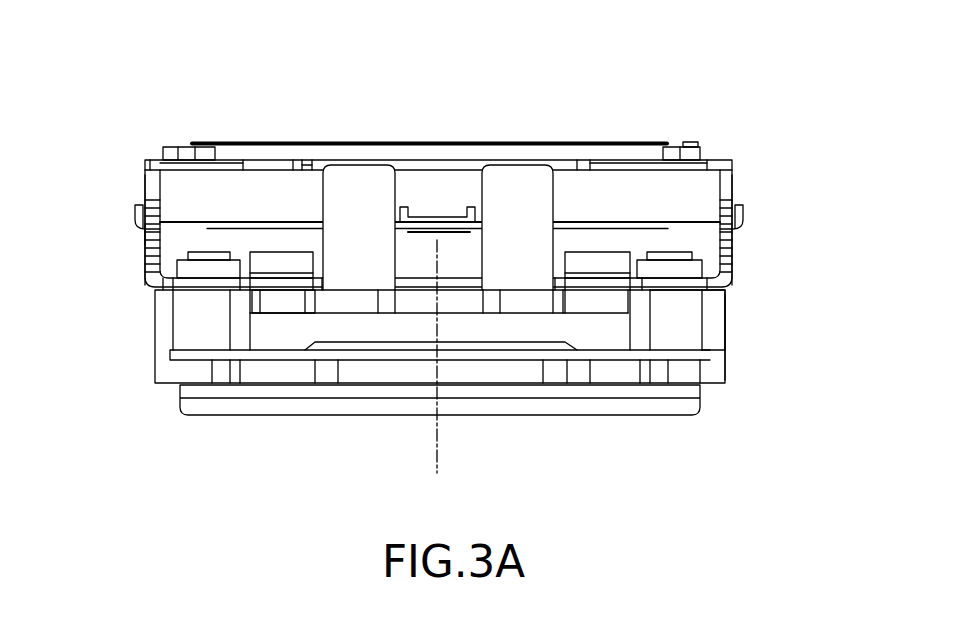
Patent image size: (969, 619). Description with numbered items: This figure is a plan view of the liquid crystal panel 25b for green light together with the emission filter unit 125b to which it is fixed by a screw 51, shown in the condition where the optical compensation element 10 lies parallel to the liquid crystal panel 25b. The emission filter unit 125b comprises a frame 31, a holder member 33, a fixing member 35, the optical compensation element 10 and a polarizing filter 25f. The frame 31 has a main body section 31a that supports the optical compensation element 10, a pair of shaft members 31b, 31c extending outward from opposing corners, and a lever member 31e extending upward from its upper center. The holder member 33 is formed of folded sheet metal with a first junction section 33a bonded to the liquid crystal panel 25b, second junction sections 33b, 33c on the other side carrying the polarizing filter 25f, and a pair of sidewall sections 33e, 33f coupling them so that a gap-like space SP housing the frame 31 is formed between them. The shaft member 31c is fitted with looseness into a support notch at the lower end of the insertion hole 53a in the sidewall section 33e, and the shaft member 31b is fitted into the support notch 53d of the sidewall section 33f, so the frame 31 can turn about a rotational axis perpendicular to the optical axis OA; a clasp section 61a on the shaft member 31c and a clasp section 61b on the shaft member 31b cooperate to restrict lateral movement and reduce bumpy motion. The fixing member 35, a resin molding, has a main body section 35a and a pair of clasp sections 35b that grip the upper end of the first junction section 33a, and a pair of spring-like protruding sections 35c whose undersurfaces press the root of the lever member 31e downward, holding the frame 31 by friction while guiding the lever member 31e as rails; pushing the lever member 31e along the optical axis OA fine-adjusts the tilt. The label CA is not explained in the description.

The holder member 33 is at (745, 158).
The sidewall section 33e is at (152, 192).
The sidewall section 33f is at (725, 196).
The first junction section 33a is at (705, 310).
The second junction section 33b is at (246, 195).
The second junction section 33c is at (630, 190).
The frame 31 is at (303, 205).
The main body section 31a is at (250, 220).
The shaft member 31b is at (705, 215).
The shaft member 31c is at (183, 215).
The lever member 31e is at (443, 212).
The fixing member 35 is at (281, 330).
The main body section 35a is at (517, 313).
The clasp section 35b is at (270, 262).
The protruding section 35c is at (357, 175).
The liquid crystal panel 25b is at (728, 327).
The polarizing filter 25f is at (558, 155).
The screw 51 is at (683, 293).
The insertion hole 53a is at (142, 238).
The support notch 53d is at (737, 232).
The clasp section 61a is at (140, 214).
The clasp section 61b is at (740, 223).
The emission filter unit 125b is at (133, 235).
The optical compensation element 10 is at (422, 233).
The space SP is at (420, 175).
The optical axis OA is at (435, 445).
The central area CA is at (598, 267).